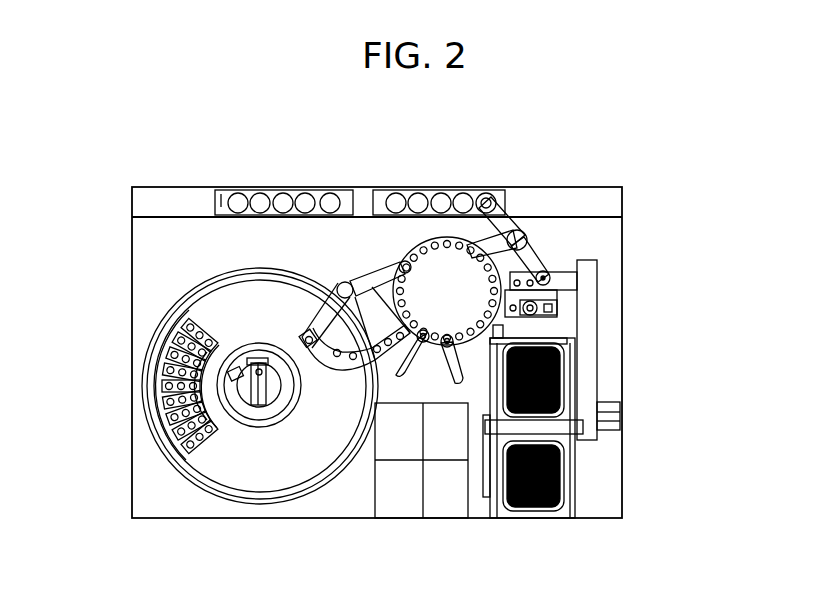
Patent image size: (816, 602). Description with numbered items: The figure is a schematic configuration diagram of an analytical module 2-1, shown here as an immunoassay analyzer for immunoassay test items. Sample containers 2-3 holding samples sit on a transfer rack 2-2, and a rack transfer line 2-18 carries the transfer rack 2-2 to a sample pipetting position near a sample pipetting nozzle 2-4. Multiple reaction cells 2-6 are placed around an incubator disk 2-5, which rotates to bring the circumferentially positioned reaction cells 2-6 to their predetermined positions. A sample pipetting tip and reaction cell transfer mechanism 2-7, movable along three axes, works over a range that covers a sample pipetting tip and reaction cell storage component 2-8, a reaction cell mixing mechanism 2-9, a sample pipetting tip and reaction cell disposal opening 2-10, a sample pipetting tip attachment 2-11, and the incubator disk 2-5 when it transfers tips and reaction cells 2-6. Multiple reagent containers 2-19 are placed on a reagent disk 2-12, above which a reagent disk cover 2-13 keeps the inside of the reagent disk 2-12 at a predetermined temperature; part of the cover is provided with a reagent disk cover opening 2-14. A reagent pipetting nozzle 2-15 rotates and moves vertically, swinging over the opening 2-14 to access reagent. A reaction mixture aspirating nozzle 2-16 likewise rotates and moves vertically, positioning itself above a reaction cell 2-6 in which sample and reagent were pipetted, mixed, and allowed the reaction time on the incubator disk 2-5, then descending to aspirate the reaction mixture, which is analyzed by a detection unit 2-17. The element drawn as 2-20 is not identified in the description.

The analytical module 2-1 is at (600, 163).
The transfer rack 2-2 is at (218, 194).
The sample containers 2-3 is at (262, 203).
The sample pipetting nozzle 2-4 is at (510, 183).
The incubator disk 2-5 is at (463, 282).
The reaction cells 2-6 is at (447, 273).
The sample pipetting tip and reaction cell transfer mechanism 2-7 is at (567, 283).
The sample pipetting tip and reaction cell storage component 2-8 is at (560, 380).
The reaction cell mixing mechanism 2-9 is at (560, 303).
The sample pipetting tip and reaction cell disposal opening 2-10 is at (547, 263).
The sample pipetting tip attachment 2-11 is at (513, 311).
The reagent disk 2-12 is at (187, 304).
The reagent disk cover 2-13 is at (208, 467).
The reagent disk cover opening 2-14 is at (332, 368).
The reagent pipetting nozzle 2-15 is at (370, 275).
The reaction mixture aspirating nozzle 2-16 is at (453, 380).
The detection unit 2-17 is at (445, 487).
The rack transfer line 2-18 is at (142, 202).
The reagent containers 2-19 is at (170, 362).
The pivot arm 2-20 is at (346, 284).